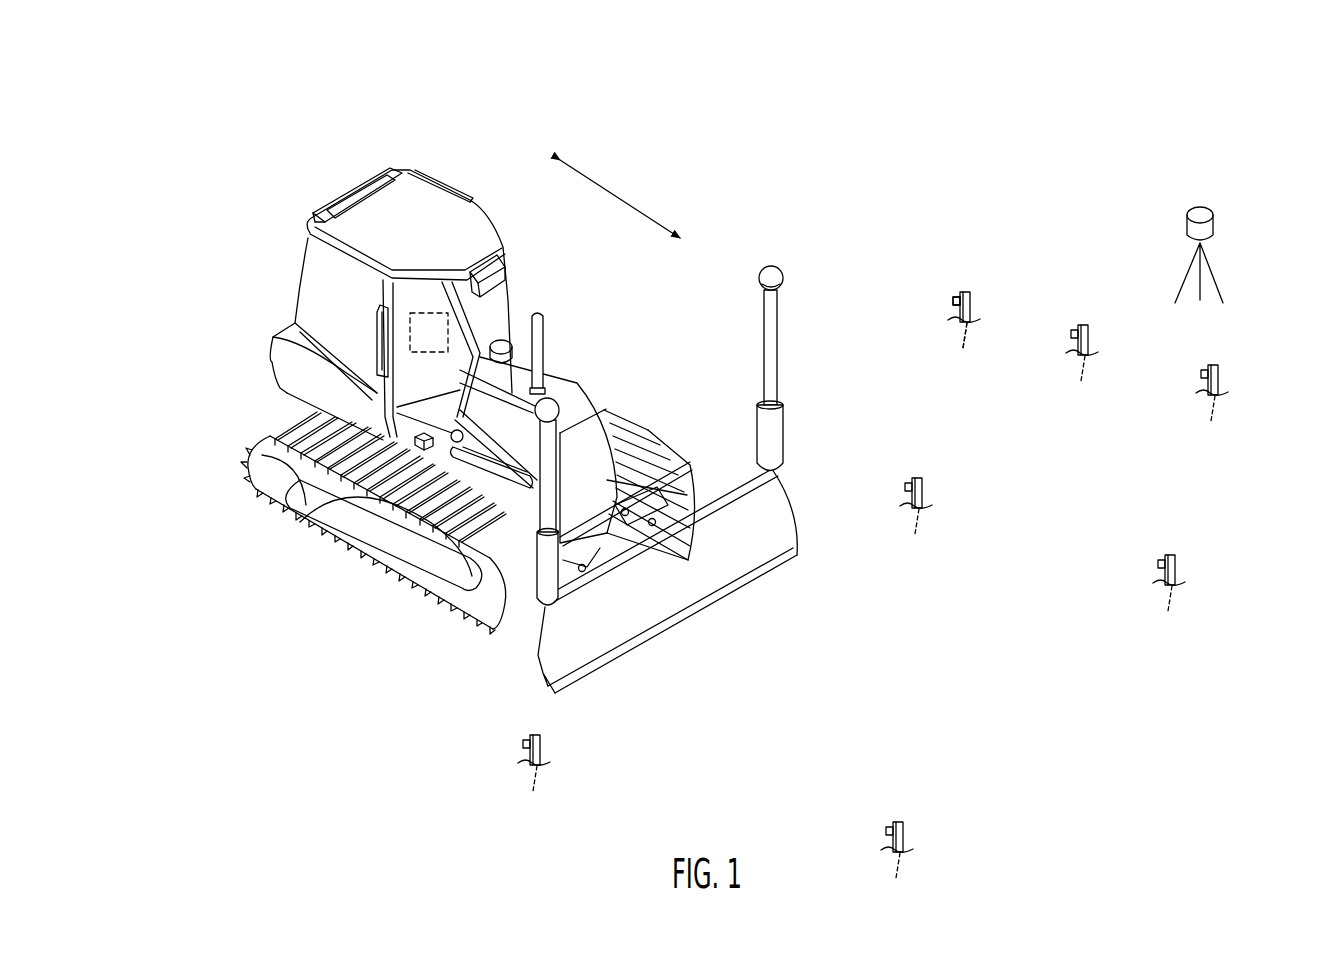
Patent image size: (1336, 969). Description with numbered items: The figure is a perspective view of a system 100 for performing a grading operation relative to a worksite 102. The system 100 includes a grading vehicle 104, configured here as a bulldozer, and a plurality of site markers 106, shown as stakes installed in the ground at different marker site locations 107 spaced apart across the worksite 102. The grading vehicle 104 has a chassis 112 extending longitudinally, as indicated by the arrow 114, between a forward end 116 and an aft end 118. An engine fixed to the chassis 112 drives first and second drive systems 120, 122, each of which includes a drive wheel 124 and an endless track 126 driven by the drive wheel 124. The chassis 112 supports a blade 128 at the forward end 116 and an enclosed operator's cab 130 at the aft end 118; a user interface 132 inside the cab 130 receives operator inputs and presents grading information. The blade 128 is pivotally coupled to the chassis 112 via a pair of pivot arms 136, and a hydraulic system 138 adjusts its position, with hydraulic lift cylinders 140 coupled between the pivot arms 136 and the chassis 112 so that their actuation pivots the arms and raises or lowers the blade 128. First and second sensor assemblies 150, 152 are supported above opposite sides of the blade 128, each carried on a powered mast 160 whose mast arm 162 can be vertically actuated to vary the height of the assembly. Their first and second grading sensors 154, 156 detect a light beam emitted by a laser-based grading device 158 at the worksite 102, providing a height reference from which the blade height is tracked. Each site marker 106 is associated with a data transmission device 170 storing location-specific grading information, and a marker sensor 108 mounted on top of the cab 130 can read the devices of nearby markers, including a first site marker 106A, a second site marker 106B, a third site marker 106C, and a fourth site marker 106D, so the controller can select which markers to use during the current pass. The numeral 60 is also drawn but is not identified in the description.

The system 100 is at (1003, 190).
The worksite 102 is at (1062, 775).
The grading vehicle 104 is at (332, 85).
The site markers 106 is at (990, 292).
The first site marker 106A is at (499, 730).
The second site marker 106B is at (908, 817).
The third site marker 106C is at (937, 464).
The fourth site marker 106D is at (1185, 547).
The marker site locations 107 is at (975, 332).
The marker sensor 108 is at (506, 262).
The chassis 112 is at (372, 553).
The arrow 114 is at (631, 198).
The forward end 116 is at (747, 607).
The aft end 118 is at (250, 415).
The first drive system 120 is at (634, 380).
The second drive system 122 is at (253, 527).
The drive wheel 124 is at (266, 460).
The endless track 126 is at (380, 575).
The blade 128 is at (763, 503).
The operator's cab 130 is at (487, 215).
The user interface 132 is at (376, 318).
The pivot arms 136 is at (586, 568).
The hydraulic system 138 is at (462, 385).
The hydraulic lift cylinders 140 is at (331, 527).
The first sensor assembly 150 is at (797, 250).
The second sensor assembly 152 is at (555, 383).
The first grading sensors 154 is at (785, 280).
The second grading sensors 156 is at (568, 410).
The laser-based grading device 158 is at (1225, 210).
The mast 160 is at (537, 565).
The mast arm 162 is at (552, 480).
The data transmission device 170 is at (955, 298).
The sprocket 60 is at (463, 603).